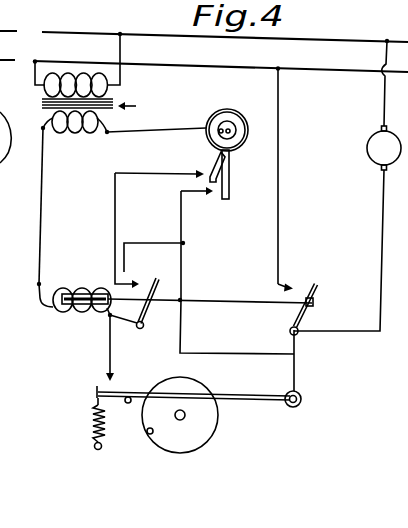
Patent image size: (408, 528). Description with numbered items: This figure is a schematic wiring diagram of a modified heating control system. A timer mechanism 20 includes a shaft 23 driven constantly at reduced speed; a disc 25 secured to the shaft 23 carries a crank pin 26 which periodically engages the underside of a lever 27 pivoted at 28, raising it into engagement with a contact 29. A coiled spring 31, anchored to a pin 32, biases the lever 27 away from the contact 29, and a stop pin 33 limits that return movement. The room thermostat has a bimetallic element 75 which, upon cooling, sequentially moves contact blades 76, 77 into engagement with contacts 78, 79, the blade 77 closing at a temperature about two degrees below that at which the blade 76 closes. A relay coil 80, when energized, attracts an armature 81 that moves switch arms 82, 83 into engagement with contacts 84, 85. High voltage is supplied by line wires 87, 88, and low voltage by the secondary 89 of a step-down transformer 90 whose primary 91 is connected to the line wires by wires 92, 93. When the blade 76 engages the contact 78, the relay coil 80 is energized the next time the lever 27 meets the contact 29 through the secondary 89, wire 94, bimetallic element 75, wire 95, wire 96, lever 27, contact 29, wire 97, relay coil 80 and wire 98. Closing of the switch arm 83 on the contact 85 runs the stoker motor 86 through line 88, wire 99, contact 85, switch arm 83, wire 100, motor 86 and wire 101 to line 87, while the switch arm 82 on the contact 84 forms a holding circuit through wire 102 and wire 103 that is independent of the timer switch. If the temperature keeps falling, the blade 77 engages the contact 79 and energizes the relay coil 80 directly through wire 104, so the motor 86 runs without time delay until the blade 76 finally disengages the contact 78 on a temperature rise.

The timer mechanism 20 is at (199, 425).
The shaft 23 is at (185, 419).
The disc 25 is at (210, 416).
The crank pin 26 is at (150, 434).
The lever 27 is at (240, 395).
The pivot 28 is at (302, 398).
The contact 29 is at (105, 380).
The coiled spring 31 is at (94, 414).
The pin 32 is at (95, 446).
The stop pin 33 is at (128, 404).
The bimetallic element 75 is at (237, 112).
The contact blade 76 is at (229, 186).
The contact blade 77 is at (216, 163).
The contact 78 is at (214, 195).
The contact 79 is at (185, 172).
The relay coil 80 is at (74, 287).
The armature 81 is at (216, 299).
The switch arm 82 is at (143, 328).
The switch arm 83 is at (318, 292).
The contact 84 is at (156, 280).
The contact 85 is at (287, 281).
The motor 86 is at (367, 142).
The line wire 87 is at (224, 37).
The line wire 88 is at (222, 67).
The low voltage secondary 89 is at (89, 136).
The step-down transformer 90 is at (100, 106).
The primary 91 is at (122, 79).
The wire 92 is at (121, 50).
The wire 93 is at (35, 84).
The wire 94 is at (178, 127).
The wire 95 is at (186, 243).
The wire 96 is at (199, 353).
The wire 97 is at (109, 352).
The wire 98 is at (42, 218).
The wire 99 is at (277, 176).
The wire 100 is at (380, 226).
The wire 101 is at (384, 101).
The wire 102 is at (143, 243).
The wire 103 is at (112, 322).
The wire 104 is at (115, 227).